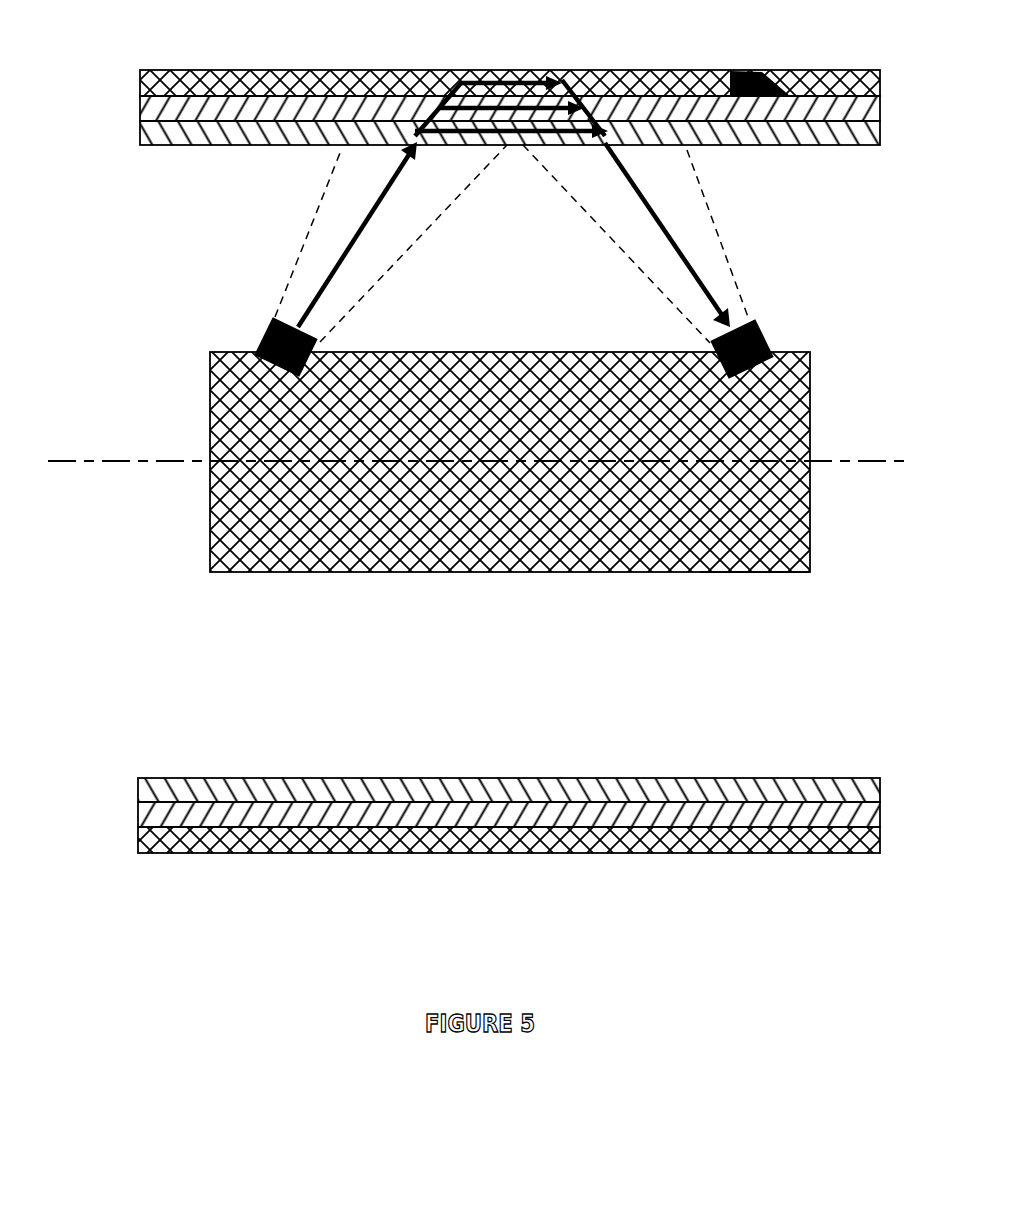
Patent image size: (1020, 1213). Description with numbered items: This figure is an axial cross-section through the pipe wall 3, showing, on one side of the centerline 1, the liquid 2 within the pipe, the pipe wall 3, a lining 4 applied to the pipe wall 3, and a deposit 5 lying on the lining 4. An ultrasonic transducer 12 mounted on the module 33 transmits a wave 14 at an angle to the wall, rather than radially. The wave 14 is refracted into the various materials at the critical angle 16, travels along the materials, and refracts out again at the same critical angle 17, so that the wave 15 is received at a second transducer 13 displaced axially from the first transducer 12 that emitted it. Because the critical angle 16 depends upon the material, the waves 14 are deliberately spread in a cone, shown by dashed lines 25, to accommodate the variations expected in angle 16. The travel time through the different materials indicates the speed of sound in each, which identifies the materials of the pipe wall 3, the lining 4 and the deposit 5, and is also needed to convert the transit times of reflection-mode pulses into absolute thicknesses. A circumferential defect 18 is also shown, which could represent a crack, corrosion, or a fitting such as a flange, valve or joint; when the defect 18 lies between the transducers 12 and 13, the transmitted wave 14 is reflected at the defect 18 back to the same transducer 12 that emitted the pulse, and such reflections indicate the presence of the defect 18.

The centerline 1 is at (479, 489).
The liquid 2 is at (510, 512).
The pipe wall 3 is at (466, 91).
The lining 4 is at (467, 119).
The deposit 5 is at (469, 147).
The ultrasonic transducer 12 is at (243, 325).
The second transducer 13 is at (786, 325).
The transmitted wave 14 is at (371, 234).
The received wave 15 is at (655, 235).
The critical angle 16 is at (511, 165).
The critical angle 17 is at (522, 144).
The circumferential defect 18 is at (747, 72).
The dashed lines 25 is at (610, 244).
The module 33 is at (727, 565).